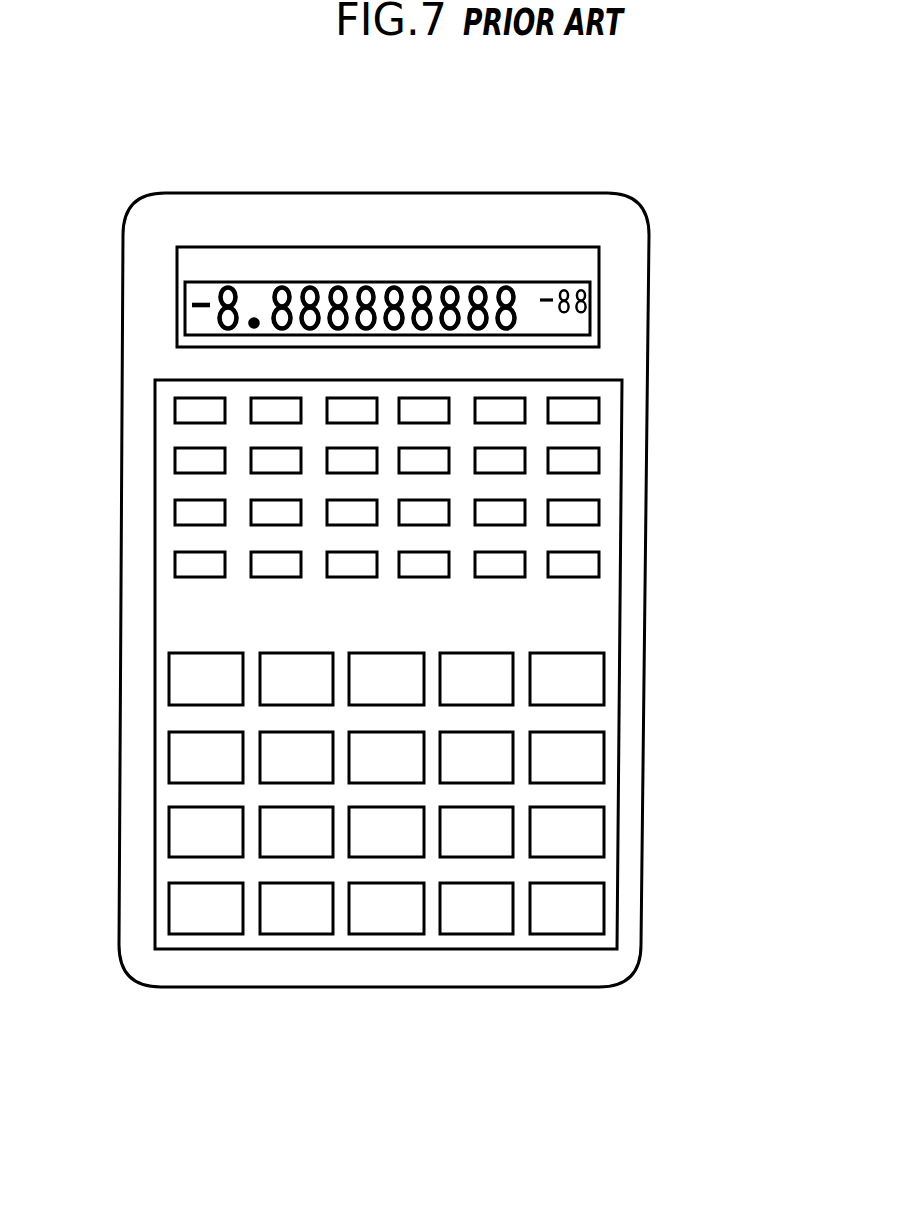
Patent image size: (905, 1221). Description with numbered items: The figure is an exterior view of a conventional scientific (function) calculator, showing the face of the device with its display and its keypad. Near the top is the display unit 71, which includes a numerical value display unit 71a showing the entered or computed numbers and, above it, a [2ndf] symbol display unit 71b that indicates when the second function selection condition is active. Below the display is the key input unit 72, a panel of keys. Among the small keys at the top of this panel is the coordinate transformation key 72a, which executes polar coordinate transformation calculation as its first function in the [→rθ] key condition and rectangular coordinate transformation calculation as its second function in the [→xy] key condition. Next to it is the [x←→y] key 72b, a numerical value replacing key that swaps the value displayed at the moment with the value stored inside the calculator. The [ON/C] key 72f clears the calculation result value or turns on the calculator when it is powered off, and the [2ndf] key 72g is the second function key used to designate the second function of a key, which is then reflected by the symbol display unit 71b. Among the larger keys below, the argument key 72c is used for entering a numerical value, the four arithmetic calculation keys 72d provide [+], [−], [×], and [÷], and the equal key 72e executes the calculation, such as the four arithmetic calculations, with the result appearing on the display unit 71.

The display unit 71 is at (599, 281).
The numerical value display unit 71a is at (496, 248).
The [2ndf] symbol display unit 71b is at (340, 252).
The key input unit 72 is at (620, 610).
The coordinate transformation key 72a is at (525, 463).
The [x←→y] key 72b is at (525, 401).
The argument key 72c is at (207, 934).
The four arithmetic calculation keys 72d is at (502, 652).
The equal key 72e is at (604, 908).
The [ON/C] key 72f is at (599, 412).
The [2ndf] key 72g is at (204, 397).